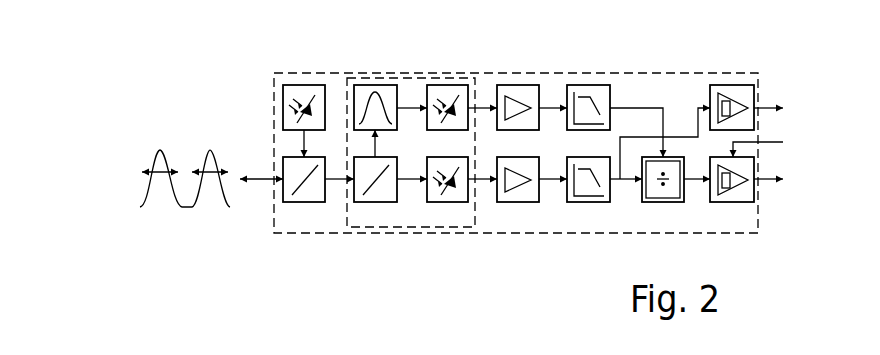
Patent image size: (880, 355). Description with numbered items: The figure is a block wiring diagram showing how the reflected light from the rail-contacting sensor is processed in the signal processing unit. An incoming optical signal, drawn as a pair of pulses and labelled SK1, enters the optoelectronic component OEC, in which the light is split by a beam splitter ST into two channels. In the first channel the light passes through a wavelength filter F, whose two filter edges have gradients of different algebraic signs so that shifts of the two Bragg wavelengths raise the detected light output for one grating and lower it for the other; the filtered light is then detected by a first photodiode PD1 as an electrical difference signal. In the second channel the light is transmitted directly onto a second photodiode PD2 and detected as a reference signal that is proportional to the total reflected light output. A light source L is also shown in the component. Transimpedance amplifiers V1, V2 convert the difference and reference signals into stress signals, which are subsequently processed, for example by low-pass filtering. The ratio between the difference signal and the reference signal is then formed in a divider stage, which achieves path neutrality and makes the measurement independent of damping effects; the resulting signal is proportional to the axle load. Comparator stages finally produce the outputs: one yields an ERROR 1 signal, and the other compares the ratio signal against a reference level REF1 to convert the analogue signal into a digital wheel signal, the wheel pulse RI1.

The light source L is at (305, 92).
The wavelength filter F is at (362, 92).
The first photodiode PD1 is at (447, 92).
The transimpedance amplifier V1 is at (518, 92).
The beam splitter ST is at (366, 203).
The second photodiode PD2 is at (460, 203).
The transimpedance amplifier V2 is at (525, 203).
The sensor coupler / input signal SK1 is at (281, 182).
The optoelectronic component OEC is at (411, 152).
The error signal output ERROR 1 is at (780, 111).
The reference signal input REF1 is at (772, 154).
The wheel pulse RI1 is at (751, 183).